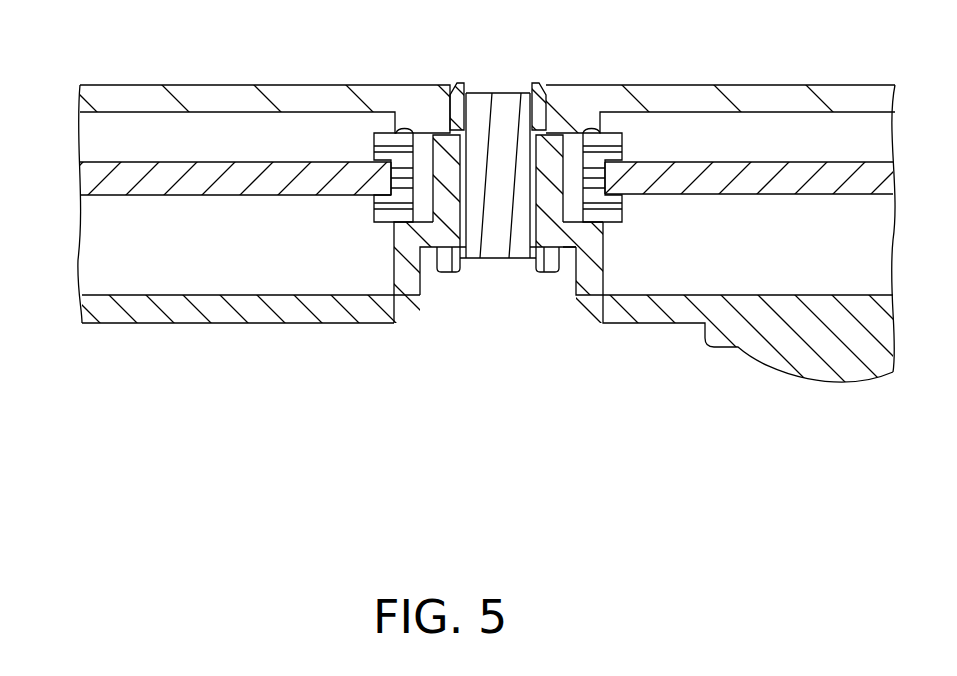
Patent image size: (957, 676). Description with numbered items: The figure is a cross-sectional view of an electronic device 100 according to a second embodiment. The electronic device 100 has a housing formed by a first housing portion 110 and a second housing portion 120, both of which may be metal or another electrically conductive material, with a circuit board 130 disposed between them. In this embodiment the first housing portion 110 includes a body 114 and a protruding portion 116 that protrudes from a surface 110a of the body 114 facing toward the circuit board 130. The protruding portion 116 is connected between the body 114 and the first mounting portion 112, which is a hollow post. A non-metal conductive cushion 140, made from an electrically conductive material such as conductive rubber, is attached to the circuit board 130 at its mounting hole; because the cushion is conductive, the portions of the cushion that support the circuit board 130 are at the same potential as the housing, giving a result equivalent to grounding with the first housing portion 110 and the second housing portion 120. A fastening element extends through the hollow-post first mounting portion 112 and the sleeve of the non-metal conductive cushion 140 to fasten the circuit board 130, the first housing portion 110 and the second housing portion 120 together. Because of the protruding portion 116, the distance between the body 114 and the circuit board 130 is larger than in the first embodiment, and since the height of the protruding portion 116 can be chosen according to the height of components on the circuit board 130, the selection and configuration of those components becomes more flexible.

The electronic device 100 is at (478, 338).
The first housing portion 110 is at (670, 307).
The surface of the body 110a is at (132, 294).
The first mounting portion 112 is at (548, 230).
The body 114 is at (348, 313).
The protruding portion 116 is at (403, 287).
The second housing portion 120 is at (238, 97).
The circuit board 130 is at (217, 178).
The non-metal conductive cushion 140 is at (387, 151).